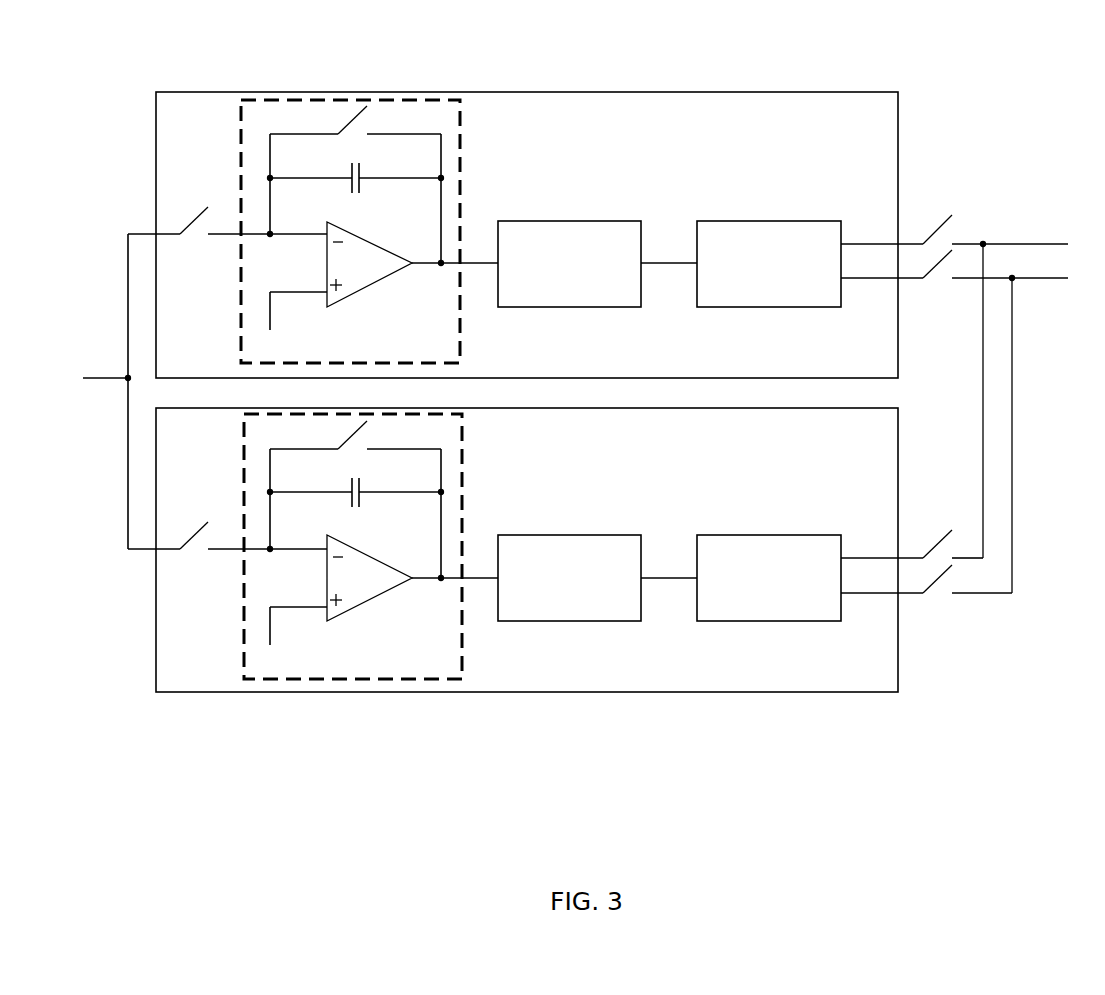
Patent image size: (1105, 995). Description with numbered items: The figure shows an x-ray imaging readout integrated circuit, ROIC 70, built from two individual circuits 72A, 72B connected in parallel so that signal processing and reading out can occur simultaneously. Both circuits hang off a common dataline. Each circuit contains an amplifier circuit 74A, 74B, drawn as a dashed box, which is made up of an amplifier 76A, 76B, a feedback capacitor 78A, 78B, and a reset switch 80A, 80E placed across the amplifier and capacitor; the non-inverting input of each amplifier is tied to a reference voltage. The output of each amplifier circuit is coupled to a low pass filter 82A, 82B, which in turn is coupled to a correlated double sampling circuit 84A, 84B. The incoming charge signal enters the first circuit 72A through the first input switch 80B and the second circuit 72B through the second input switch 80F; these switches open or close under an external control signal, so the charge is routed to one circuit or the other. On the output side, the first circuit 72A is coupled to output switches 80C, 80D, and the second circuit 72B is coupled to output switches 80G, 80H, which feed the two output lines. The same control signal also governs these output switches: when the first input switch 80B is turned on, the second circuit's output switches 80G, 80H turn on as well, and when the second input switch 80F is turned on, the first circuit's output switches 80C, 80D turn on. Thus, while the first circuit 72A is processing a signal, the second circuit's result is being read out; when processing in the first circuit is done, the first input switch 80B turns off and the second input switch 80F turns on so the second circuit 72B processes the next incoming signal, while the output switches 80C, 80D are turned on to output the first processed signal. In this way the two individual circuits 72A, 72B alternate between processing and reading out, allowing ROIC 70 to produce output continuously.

The ROIC 70 is at (922, 65).
The first individual circuit 72A is at (156, 113).
The second individual circuit 72B is at (156, 639).
The amplifier circuit 74A is at (241, 125).
The amplifier circuit 74B is at (244, 422).
The amplifier 76A is at (352, 231).
The amplifier 76B is at (352, 544).
The capacitor 78A is at (351, 172).
The capacitor 78B is at (351, 487).
The switch 80A is at (352, 118).
The switch 80B is at (190, 220).
The switch 80C is at (937, 228).
The switch 80D is at (937, 262).
The switch 80E is at (351, 433).
The switch 80F is at (192, 536).
The switch 80G is at (935, 542).
The switch 80H is at (937, 575).
The low pass filter 82A is at (570, 221).
The low pass filter 82B is at (570, 535).
The correlated double sampling circuit 84A is at (768, 221).
The correlated double sampling circuit 84B is at (768, 535).